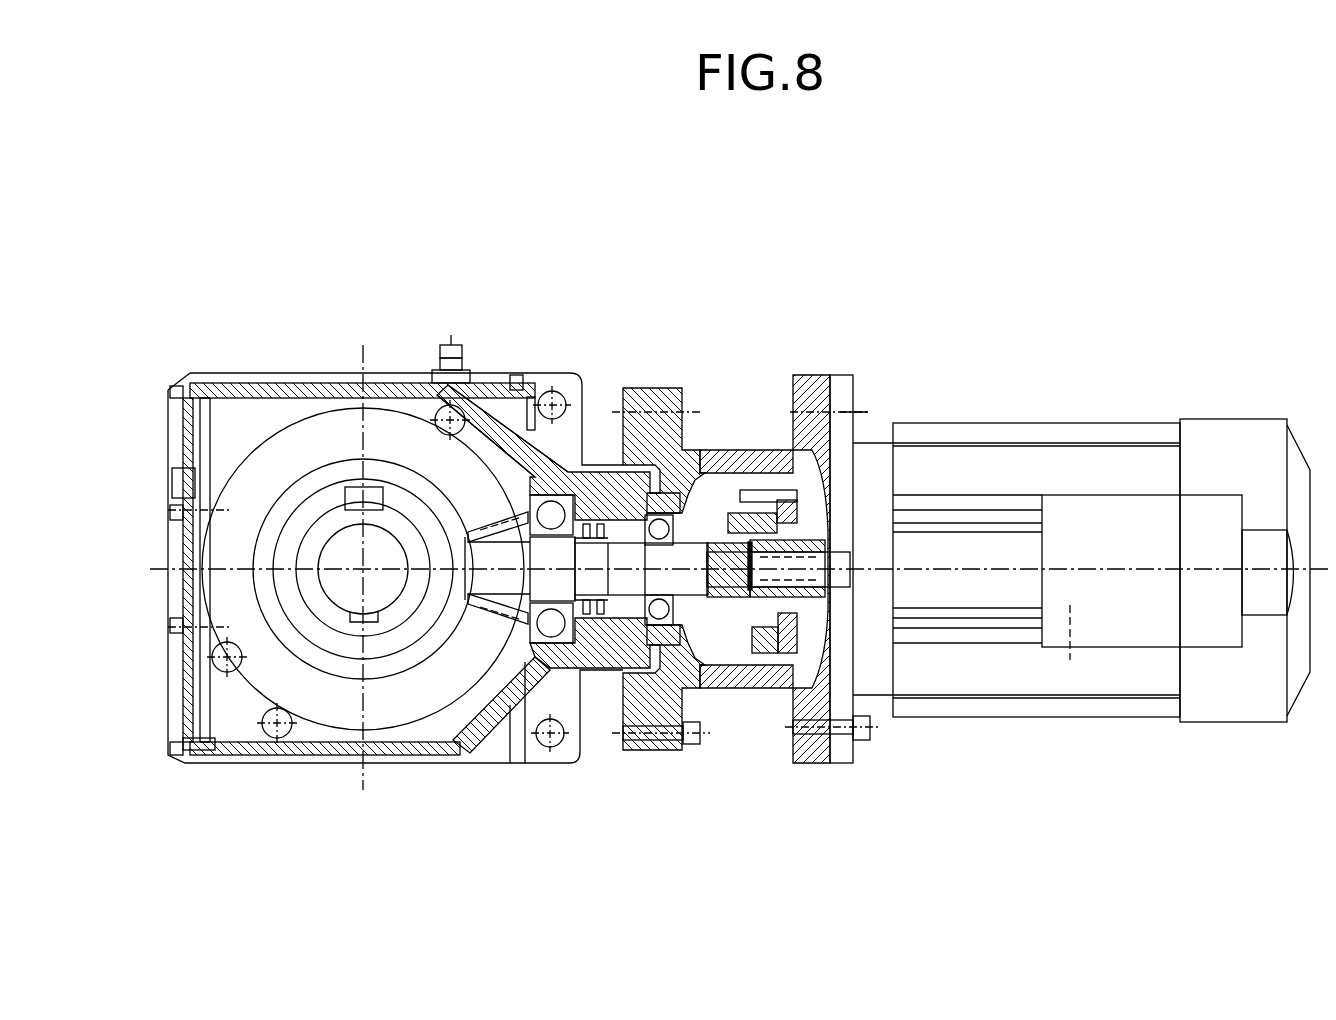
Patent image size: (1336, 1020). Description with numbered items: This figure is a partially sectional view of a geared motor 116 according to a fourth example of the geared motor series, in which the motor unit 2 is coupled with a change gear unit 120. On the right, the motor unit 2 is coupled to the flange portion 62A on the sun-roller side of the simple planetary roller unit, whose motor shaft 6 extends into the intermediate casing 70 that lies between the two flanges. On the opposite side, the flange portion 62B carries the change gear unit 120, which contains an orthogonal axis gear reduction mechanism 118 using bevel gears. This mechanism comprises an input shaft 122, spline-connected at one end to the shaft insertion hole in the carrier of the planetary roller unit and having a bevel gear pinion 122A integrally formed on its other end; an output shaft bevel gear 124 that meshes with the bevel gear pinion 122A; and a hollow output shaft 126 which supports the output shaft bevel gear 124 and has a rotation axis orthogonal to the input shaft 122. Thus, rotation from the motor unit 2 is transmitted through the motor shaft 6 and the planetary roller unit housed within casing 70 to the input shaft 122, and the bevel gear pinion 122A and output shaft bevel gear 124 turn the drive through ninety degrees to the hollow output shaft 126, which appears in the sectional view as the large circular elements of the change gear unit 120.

The motor unit 2 is at (1060, 423).
The motor shaft 6 is at (803, 580).
The flange portion 62A is at (812, 375).
The flange portion 62B is at (665, 388).
The joint casing 70 is at (737, 385).
The geared motor 116 is at (1121, 292).
The orthogonal axis gear reduction mechanism 118 is at (448, 718).
The change gear unit 120 is at (500, 302).
The input shaft 122 is at (618, 580).
The bevel gear pinion 122A is at (508, 627).
The output shaft bevel gear 124 is at (312, 727).
The output shaft 126 is at (312, 610).